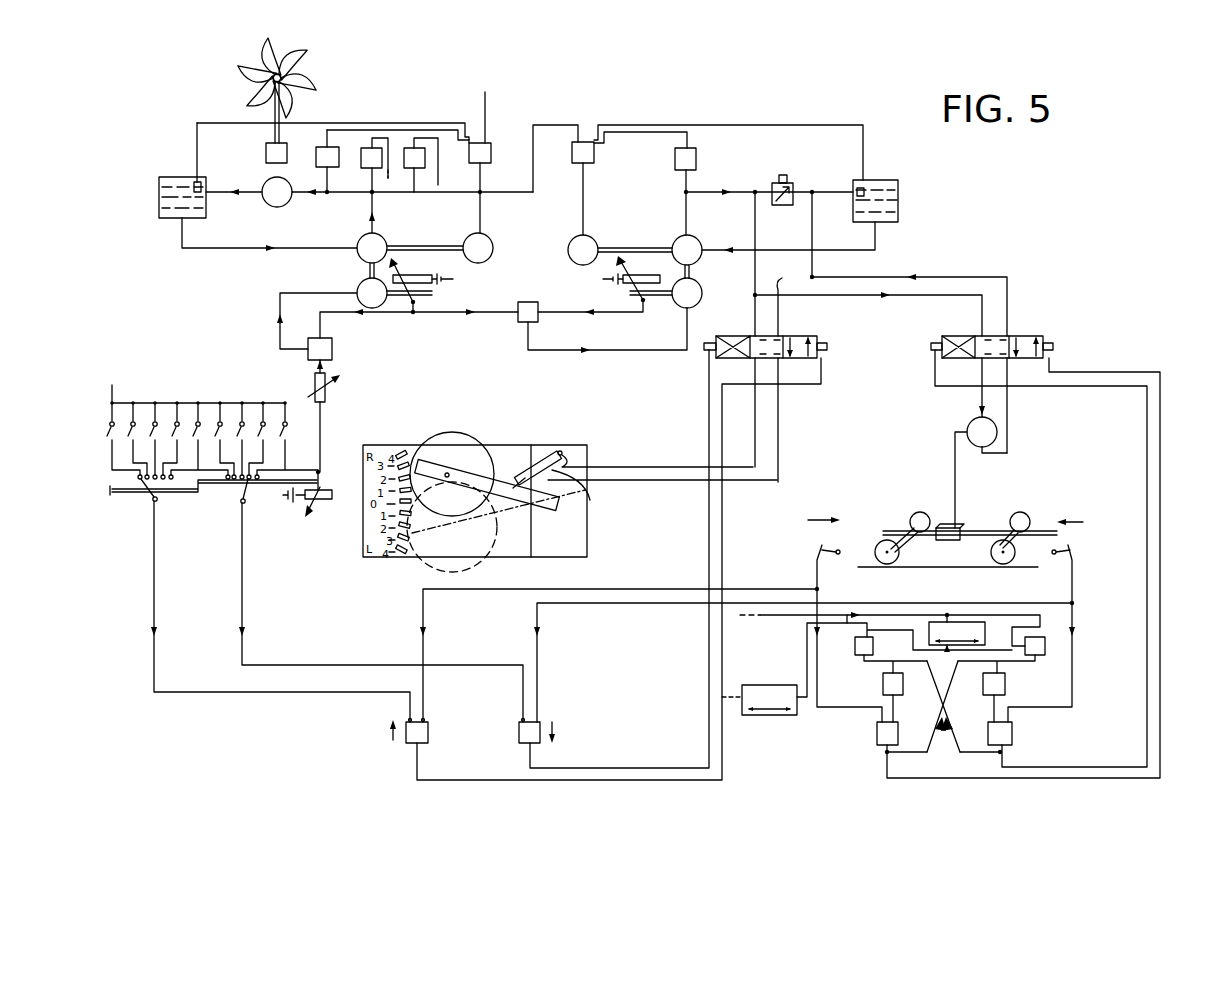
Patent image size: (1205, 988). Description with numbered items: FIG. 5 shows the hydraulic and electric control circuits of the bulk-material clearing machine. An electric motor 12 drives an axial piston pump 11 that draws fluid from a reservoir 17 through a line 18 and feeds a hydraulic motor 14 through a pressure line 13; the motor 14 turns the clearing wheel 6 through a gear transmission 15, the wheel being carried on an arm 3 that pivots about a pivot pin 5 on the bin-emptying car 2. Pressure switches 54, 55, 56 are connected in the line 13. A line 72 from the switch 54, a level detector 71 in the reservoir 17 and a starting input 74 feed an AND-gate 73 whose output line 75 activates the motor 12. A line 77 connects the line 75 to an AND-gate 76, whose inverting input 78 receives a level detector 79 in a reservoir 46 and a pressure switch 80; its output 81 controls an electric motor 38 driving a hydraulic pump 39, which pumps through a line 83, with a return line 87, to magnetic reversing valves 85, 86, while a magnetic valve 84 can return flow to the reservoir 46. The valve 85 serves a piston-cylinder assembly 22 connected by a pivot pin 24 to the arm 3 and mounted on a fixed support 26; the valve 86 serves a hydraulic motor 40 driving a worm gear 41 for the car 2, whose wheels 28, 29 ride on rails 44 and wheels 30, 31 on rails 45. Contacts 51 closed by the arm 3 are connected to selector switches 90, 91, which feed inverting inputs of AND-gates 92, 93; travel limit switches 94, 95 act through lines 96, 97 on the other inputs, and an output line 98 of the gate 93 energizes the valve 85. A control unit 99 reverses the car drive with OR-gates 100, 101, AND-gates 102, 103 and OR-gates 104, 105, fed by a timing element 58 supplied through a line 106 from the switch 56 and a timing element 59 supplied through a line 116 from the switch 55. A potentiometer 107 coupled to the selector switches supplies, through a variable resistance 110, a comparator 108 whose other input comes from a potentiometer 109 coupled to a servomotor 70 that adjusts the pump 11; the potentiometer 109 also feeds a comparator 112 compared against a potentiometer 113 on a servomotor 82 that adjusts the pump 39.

The bin-emptying car 2 is at (1008, 514).
The arm 3 is at (465, 470).
The pivot pin 5 is at (548, 502).
The clearing wheel 6 is at (305, 70).
The axial piston pump 11 is at (387, 243).
The electric motor 12 is at (493, 244).
The pressure line 13 is at (378, 205).
The hydraulic axial piston motor 14 is at (262, 190).
The gear transmission 15 is at (266, 153).
The reservoir 17 is at (172, 218).
The line 18 is at (215, 250).
The piston-cylinder assembly 22 is at (662, 491).
The pivot pin 24 is at (521, 478).
The fixed support 26 is at (587, 460).
The wheel 28 is at (1028, 518).
The wheel 29 is at (916, 512).
The wheel 30 is at (880, 562).
The wheel 31 is at (1012, 562).
The electric motor 38 is at (596, 242).
The hydraulic pump 39 is at (700, 243).
The hydraulic motor 40 is at (969, 425).
The worm gear 41 is at (957, 524).
The rails 44 is at (890, 531).
The rails 45 is at (920, 567).
The reservoir 46 is at (898, 212).
The contacts 51 is at (292, 434).
The pressure switch 54 is at (319, 147).
The pressure switch 55 is at (366, 148).
The pressure switch 56 is at (409, 148).
The timing element 58 is at (964, 622).
The timing element 59 is at (780, 715).
The servomotor 70 is at (360, 284).
The level detector 71 is at (194, 182).
The line 72 is at (444, 173).
The AND-gate 73 is at (491, 155).
The input 74 is at (485, 98).
The output line 75 is at (480, 200).
The AND-gate 76 is at (594, 153).
The line 77 is at (552, 125).
The inverting input 78 is at (594, 141).
The level detector 79 is at (861, 188).
The pressure switch 80 is at (696, 158).
The output 81 is at (583, 195).
The servomotor 82 is at (682, 308).
The line 83 is at (755, 270).
The magnetic valve 84 is at (783, 205).
The magnetic reversing valve 85 is at (797, 332).
The magnetic reversing valve 86 is at (1031, 330).
The return line 87 is at (792, 369).
The selector switch 90 is at (149, 492).
The selector switch 91 is at (247, 495).
The AND-gate 92 is at (428, 725).
The AND-gate 93 is at (519, 726).
The travel limit switch 94 is at (814, 553).
The travel limit switch 95 is at (1076, 552).
The line 96 is at (423, 613).
The line 97 is at (538, 638).
The line 98 is at (709, 712).
The control unit 99 is at (812, 758).
The OR-gate 100 is at (877, 739).
The OR-gate 101 is at (1012, 736).
The AND-gate 102 is at (883, 686).
The AND-gate 103 is at (1005, 686).
The OR-gate 104 is at (855, 648).
The OR-gate 105 is at (1045, 646).
The line 106 is at (437, 172).
The potentiometer 107 is at (321, 501).
The comparator 108 is at (332, 349).
The potentiometer 109 is at (428, 283).
The variable resistance 110 is at (326, 392).
The comparator 112 is at (521, 322).
The potentiometer 113 is at (640, 275).
The line 116 is at (392, 176).